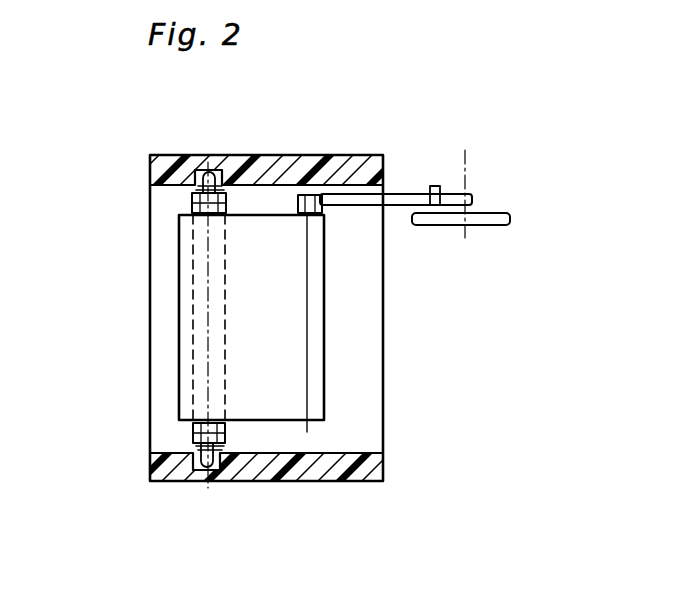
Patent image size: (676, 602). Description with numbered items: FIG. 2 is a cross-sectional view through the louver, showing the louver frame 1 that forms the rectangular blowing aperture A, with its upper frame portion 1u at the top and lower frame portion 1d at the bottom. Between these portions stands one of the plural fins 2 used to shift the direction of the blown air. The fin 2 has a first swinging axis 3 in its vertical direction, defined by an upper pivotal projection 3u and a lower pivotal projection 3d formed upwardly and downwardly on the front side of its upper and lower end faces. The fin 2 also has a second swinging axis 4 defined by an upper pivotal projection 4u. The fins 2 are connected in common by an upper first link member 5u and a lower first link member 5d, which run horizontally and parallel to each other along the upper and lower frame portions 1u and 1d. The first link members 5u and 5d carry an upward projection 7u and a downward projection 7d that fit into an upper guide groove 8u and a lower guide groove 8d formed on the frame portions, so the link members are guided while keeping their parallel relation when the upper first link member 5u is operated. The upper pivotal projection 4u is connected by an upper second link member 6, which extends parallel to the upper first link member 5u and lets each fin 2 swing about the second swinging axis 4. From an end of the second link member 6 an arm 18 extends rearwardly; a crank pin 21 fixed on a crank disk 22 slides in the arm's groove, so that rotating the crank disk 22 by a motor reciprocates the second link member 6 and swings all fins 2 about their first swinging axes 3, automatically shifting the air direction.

The louver frame 1 is at (338, 157).
The upper frame portion 1u is at (150, 170).
The lower frame portion 1d is at (158, 481).
The fin 2 is at (178, 268).
The first swinging axis 3 is at (208, 370).
The upper pivotal projection 3u is at (192, 201).
The lower pivotal projection 3d is at (192, 432).
The second swinging axis 4 is at (309, 361).
The upper pivotal projection 4u is at (298, 197).
The upper first link member 5u is at (172, 182).
The lower first link member 5d is at (226, 443).
The upper second link member 6 is at (358, 193).
The upward projection 7u is at (196, 168).
The downward projection 7d is at (213, 473).
The upper guide groove 8u is at (217, 180).
The lower guide groove 8d is at (221, 462).
The arm 18 is at (428, 188).
The crank pin 21 is at (467, 170).
The crank disk 22 is at (514, 218).
The blowing aperture A is at (146, 322).